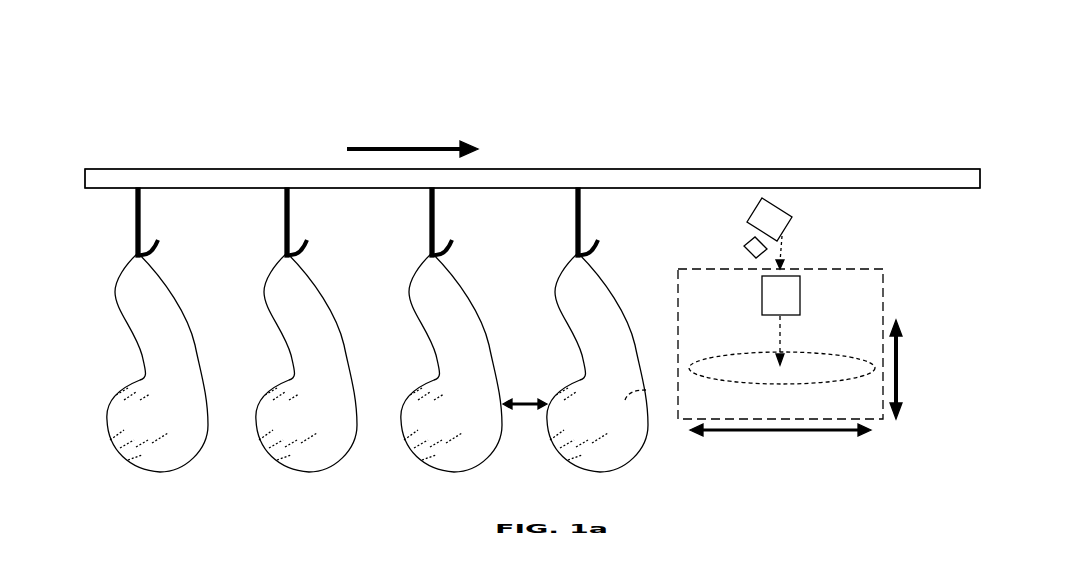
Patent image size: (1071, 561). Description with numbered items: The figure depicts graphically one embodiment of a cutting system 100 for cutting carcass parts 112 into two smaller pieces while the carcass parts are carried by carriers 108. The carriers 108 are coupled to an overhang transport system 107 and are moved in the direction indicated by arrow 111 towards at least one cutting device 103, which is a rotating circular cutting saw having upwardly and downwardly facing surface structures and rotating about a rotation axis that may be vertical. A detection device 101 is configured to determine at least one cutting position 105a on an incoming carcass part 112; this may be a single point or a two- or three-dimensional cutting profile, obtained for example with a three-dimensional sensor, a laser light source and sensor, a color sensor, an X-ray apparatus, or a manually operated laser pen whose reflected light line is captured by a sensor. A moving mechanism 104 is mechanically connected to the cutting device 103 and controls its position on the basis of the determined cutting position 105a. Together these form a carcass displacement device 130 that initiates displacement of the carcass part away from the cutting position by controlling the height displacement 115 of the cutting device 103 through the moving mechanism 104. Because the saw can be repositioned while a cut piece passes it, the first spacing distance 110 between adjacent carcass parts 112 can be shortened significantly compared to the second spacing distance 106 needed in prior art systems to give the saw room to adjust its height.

The cutting system 100 is at (127, 138).
The detection device 101 is at (768, 233).
The cutting device 103 is at (782, 368).
The moving mechanism 104 is at (781, 320).
The cutting position 105a is at (625, 404).
The distance d2 106 is at (778, 457).
The overhang transport system 107 is at (567, 169).
The carrier 108 is at (576, 212).
The distance d1 110 is at (525, 388).
The arrow indicating direction of movement 111 is at (393, 148).
The carcass part 112 is at (377, 362).
The height displacement 115 is at (900, 368).
The carcass displacement device 130 is at (830, 268).